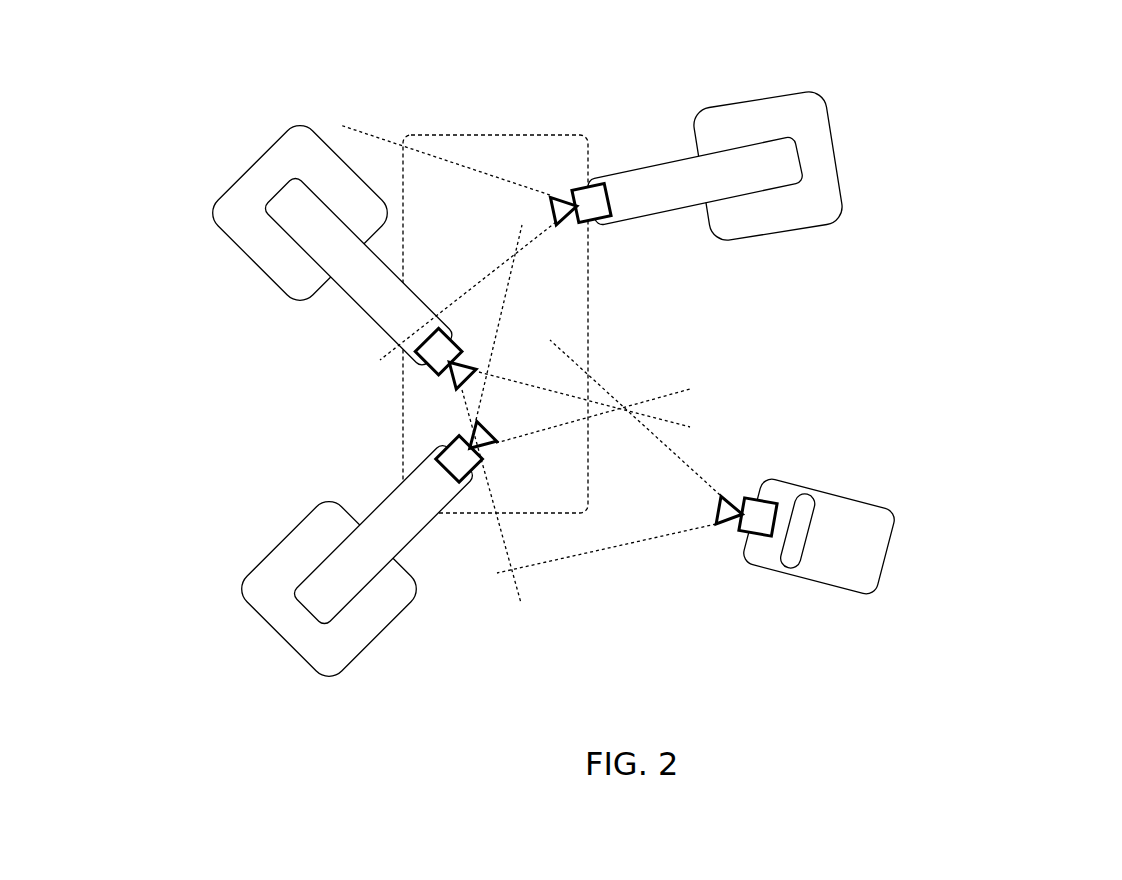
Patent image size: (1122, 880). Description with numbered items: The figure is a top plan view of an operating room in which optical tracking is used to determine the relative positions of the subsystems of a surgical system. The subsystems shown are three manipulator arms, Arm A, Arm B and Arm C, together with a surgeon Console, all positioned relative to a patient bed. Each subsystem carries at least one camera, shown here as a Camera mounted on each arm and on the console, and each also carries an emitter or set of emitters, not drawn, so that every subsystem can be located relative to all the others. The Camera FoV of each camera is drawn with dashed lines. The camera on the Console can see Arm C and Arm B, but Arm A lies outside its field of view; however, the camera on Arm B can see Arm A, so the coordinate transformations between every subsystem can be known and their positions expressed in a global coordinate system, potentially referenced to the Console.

The manipulator arm A Arm A is at (838, 137).
The manipulator arm B Arm B is at (240, 614).
The manipulator arm C Arm C is at (227, 245).
The surgeon console Console is at (907, 507).
The camera Camera is at (752, 490).
The camera field-of-view Camera FoV is at (682, 520).